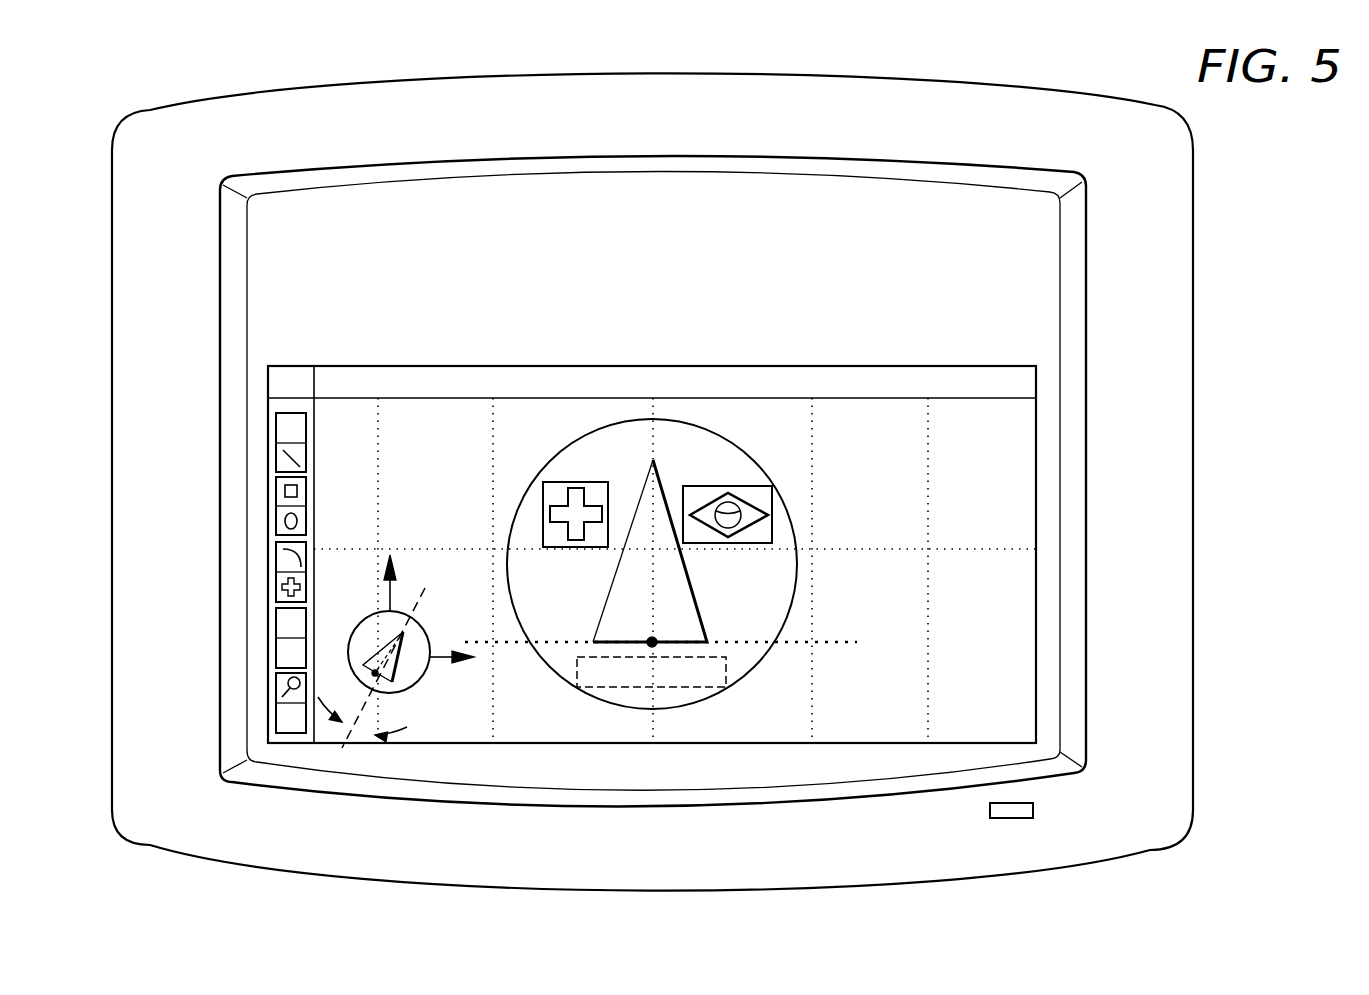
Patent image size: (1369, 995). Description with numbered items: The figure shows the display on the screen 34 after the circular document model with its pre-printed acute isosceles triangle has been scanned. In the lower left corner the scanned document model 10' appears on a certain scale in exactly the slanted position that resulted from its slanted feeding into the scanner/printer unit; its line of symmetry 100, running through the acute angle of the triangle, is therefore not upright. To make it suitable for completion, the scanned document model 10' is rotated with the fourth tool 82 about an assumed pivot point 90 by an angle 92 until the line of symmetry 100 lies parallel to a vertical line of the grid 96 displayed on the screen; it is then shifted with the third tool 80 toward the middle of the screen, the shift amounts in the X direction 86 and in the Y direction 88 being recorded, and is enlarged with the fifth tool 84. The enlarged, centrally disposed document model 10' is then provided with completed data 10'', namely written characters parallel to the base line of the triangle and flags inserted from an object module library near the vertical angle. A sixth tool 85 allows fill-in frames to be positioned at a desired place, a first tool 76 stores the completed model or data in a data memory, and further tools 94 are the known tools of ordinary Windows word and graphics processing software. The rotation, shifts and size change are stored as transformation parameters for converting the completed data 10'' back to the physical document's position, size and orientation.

The screen 34 is at (1146, 492).
The first tool 76 is at (652, 346).
The further tools 94 is at (795, 366).
The sixth tool 85 is at (280, 497).
The third tool 80 is at (280, 580).
The fourth tool 82 is at (280, 632).
The fifth tool 84 is at (280, 690).
The grid 96 is at (857, 642).
The scanned document model 10' is at (683, 564).
The completed data 10'' is at (559, 676).
The assumed pivot point 90 is at (378, 676).
The shift in the Y direction 88 is at (388, 592).
The shift in the X direction 86 is at (440, 656).
The line of symmetry 100 is at (420, 590).
The angle 92 is at (358, 740).